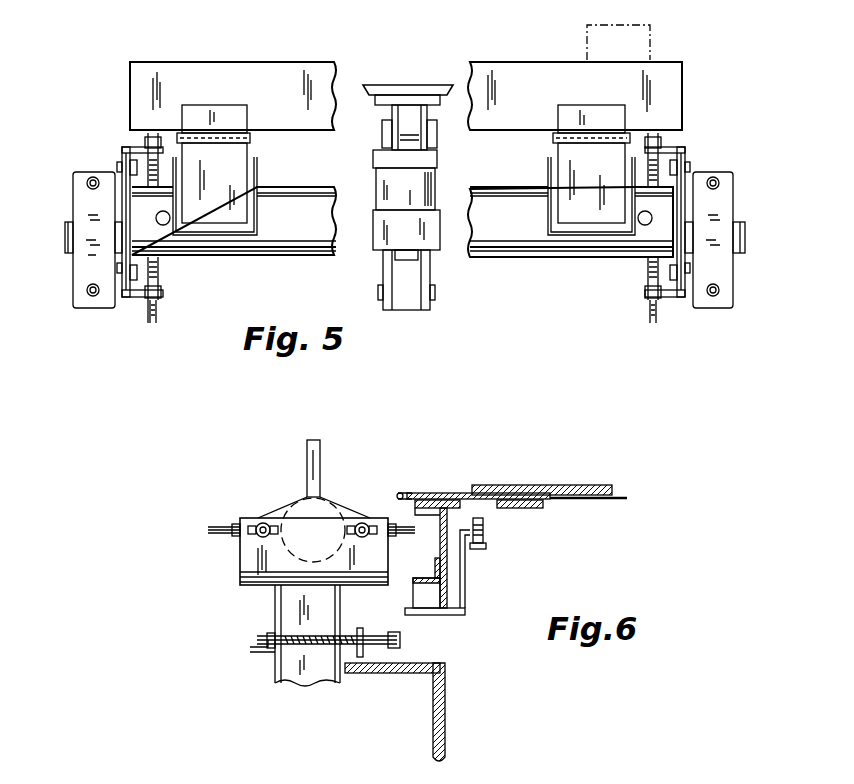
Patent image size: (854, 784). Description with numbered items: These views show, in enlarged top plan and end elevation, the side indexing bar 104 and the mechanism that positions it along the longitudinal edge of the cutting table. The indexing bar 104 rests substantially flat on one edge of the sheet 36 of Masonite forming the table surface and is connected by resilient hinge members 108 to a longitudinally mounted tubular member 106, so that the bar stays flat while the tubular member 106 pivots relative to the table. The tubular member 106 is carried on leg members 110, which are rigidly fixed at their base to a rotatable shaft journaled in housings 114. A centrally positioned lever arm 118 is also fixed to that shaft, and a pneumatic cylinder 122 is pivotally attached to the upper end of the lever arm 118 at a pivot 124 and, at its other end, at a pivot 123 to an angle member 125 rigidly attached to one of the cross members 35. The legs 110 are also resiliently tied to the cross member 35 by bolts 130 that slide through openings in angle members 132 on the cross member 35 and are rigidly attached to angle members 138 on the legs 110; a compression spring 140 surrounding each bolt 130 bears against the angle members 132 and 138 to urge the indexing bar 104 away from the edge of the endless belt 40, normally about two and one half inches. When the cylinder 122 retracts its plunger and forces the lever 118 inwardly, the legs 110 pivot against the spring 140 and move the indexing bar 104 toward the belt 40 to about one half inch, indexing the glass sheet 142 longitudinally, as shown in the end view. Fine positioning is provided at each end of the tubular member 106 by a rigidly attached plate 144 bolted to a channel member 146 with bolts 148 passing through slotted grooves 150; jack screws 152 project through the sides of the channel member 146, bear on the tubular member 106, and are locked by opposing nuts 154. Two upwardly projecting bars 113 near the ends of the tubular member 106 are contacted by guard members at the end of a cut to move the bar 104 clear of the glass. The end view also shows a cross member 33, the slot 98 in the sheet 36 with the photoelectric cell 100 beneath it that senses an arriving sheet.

In FIG. 6, the cross member 33 is at (445, 585).
In FIG. 5, the cross member 35 is at (420, 68).
In FIG. 6, the cross member 35 is at (447, 712).
In FIG. 6, the sheet 36 is at (545, 508).
In FIG. 6, the endless belt 40 is at (597, 502).
In FIG. 6, the slot 98 is at (497, 506).
In FIG. 6, the photoelectric cell 100 is at (485, 533).
In FIG. 5, the side indexing bar 104 is at (130, 85).
In FIG. 6, the side indexing bar 104 is at (448, 492).
In FIG. 5, the tubular member 106 is at (318, 258).
In FIG. 6, the tubular member 106 is at (302, 512).
In FIG. 5, the resilient hinge member 108 is at (248, 112).
In FIG. 6, the resilient hinge member 108 is at (416, 492).
In FIG. 6, the leg member 110 is at (280, 608).
In FIG. 5, the upwardly projecting bar 113 is at (165, 225).
In FIG. 5, the housing 114 is at (87, 268).
In FIG. 5, the lever arm 118 is at (402, 310).
In FIG. 5, the pneumatic cylinder 122 is at (376, 182).
In FIG. 5, the pivotal attachment 123 is at (383, 128).
In FIG. 5, the pivotal attachment 124 is at (435, 293).
In FIG. 5, the angle member 125 is at (385, 104).
In FIG. 6, the bolt 130 is at (385, 635).
In FIG. 6, the angle member 132 is at (395, 662).
In FIG. 6, the angle member 138 is at (268, 655).
In FIG. 6, the compression spring 140 is at (312, 650).
In FIG. 5, the sheet 142 is at (652, 38).
In FIG. 6, the sheet 142 is at (540, 484).
In FIG. 5, the plate 144 is at (128, 148).
In FIG. 5, the channel member 146 is at (122, 300).
In FIG. 5, the bolt 148 is at (119, 166).
In FIG. 6, the bolt 148 is at (258, 536).
In FIG. 6, the slotted groove 150 is at (250, 526).
In FIG. 5, the jack screw 152 is at (160, 270).
In FIG. 5, the opposing nut 154 is at (652, 318).
In FIG. 6, the opposing nut 154 is at (234, 520).